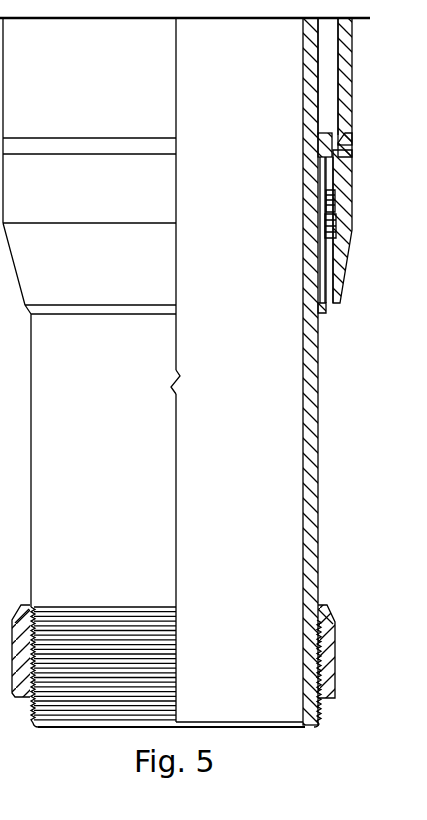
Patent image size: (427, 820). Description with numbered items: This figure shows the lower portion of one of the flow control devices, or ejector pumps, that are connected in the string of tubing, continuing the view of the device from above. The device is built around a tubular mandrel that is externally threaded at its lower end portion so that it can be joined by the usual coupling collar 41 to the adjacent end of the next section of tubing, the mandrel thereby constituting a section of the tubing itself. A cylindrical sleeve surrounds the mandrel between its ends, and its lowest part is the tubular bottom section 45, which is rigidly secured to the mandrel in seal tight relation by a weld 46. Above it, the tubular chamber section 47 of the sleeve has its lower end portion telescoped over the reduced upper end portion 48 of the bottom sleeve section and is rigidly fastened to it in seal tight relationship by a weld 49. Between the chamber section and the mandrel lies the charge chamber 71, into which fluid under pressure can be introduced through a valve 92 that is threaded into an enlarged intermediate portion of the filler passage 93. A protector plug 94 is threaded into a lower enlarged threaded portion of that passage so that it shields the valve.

The coupling collar 41 is at (330, 662).
The tubular bottom section 45 is at (347, 181).
The weld 46 is at (326, 312).
The tubular chamber section 47 is at (348, 56).
The reduced upper end portion 48 is at (318, 144).
The weld 49 is at (348, 147).
The charge chamber 71 is at (330, 92).
The valve 92 is at (328, 198).
The filler passage 93 is at (322, 158).
The protector plug 94 is at (328, 232).